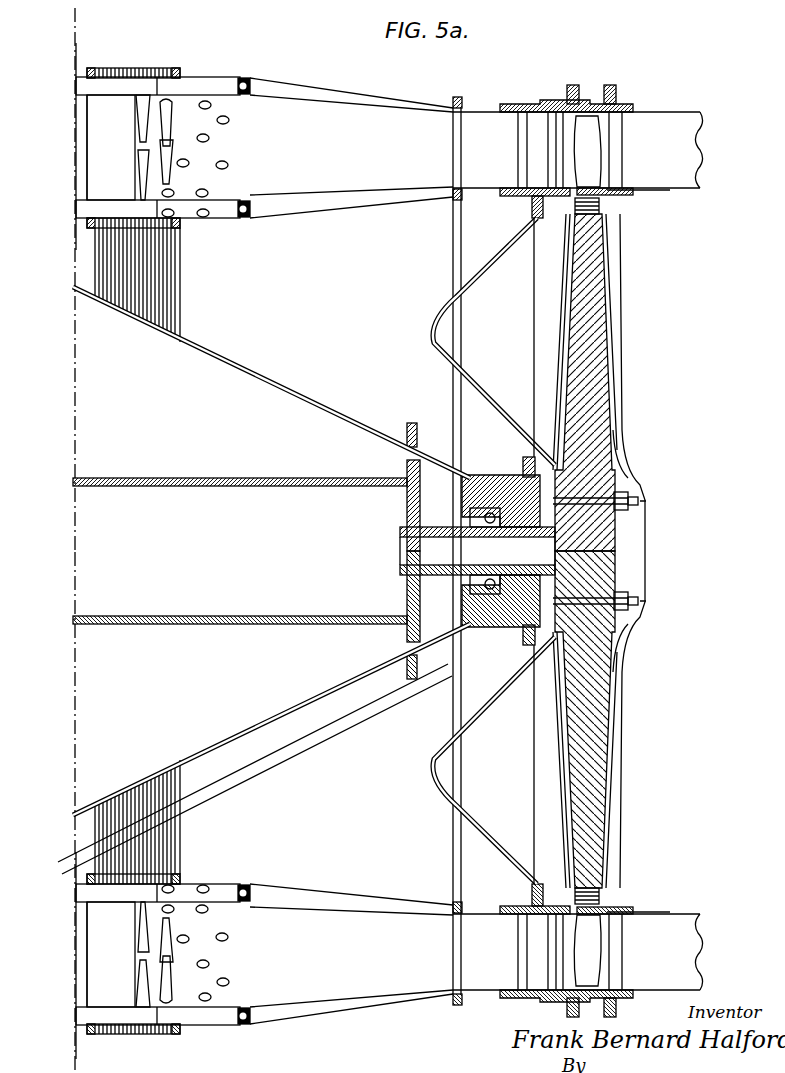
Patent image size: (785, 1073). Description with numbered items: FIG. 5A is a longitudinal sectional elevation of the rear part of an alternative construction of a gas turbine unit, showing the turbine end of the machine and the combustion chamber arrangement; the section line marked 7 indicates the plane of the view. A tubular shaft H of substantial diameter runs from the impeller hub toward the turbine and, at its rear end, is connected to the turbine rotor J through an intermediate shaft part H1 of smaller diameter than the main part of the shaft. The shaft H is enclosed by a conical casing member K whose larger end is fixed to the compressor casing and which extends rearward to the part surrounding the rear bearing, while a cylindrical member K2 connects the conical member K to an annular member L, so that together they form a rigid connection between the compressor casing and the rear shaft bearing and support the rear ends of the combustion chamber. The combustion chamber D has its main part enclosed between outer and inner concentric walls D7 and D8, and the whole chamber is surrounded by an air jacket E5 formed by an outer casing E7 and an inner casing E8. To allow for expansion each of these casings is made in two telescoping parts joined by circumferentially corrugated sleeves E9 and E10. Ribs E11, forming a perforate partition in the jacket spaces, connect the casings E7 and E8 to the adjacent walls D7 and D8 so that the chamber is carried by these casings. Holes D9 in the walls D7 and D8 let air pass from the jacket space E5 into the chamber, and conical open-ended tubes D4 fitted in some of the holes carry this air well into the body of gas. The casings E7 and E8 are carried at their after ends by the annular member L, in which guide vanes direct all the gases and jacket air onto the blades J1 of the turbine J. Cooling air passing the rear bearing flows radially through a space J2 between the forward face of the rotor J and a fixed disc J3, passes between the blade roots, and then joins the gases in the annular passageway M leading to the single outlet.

The section line 7 is at (80, 21).
The combustion chamber D is at (143, 147).
The conical open-ended tube D4 is at (166, 162).
The outer concentric wall D7 is at (111, 147).
The inner concentric wall D8 is at (158, 209).
The holes D9 is at (195, 159).
The air jacket E5 is at (133, 73).
The outer casing E7 is at (166, 122).
The inner casing E8 is at (133, 223).
The corrugated sleeve E9 is at (158, 86).
The corrugated sleeve E10 is at (137, 285).
The ribs E11 is at (244, 86).
The tubular shaft H is at (240, 482).
The intermediate shaft part H1 is at (477, 539).
The turbine rotor J is at (585, 382).
The turbine blades J1 is at (587, 151).
The space J2 is at (625, 382).
The fixed disc J3 is at (561, 342).
The conical casing member K is at (271, 382).
The cylindrical member K2 is at (290, 753).
The annular member L is at (566, 98).
The annular passageway M is at (578, 150).